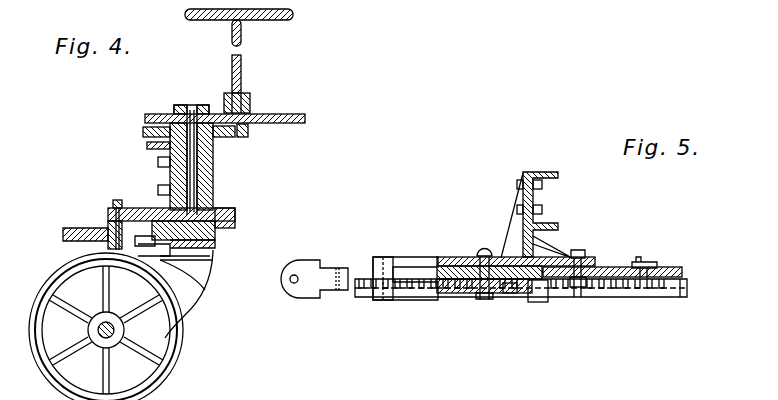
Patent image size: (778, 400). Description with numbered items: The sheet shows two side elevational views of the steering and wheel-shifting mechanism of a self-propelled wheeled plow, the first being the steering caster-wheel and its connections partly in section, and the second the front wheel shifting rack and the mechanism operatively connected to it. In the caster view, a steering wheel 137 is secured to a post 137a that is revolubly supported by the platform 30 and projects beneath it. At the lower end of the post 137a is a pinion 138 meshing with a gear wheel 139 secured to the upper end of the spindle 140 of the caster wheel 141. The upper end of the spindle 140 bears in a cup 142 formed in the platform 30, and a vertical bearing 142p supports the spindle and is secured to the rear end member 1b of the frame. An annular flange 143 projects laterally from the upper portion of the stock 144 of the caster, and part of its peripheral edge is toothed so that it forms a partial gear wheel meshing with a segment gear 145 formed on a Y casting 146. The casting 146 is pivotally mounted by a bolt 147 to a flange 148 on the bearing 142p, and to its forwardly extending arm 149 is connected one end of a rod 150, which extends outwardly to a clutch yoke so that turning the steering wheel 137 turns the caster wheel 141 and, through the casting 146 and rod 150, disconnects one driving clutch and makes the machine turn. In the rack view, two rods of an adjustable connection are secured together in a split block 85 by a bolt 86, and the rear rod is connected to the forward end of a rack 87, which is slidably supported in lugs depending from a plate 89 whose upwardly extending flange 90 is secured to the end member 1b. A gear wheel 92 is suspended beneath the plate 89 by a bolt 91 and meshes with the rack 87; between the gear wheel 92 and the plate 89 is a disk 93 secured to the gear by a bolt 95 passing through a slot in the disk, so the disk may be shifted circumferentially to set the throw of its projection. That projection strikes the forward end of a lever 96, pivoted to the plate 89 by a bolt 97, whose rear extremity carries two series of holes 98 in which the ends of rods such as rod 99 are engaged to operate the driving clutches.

In FIG. 4, the steering wheel 137 is at (293, 14).
In FIG. 4, the post 137a is at (241, 72).
In FIG. 4, the platform 30 is at (305, 121).
In FIG. 4, the cup 142 is at (181, 104).
In FIG. 4, the spindle 140 is at (213, 173).
In FIG. 4, the vertical bearing 142p is at (213, 192).
In FIG. 4, the gear wheel 139 is at (143, 133).
In FIG. 4, the pinion 138 is at (248, 132).
In FIG. 4, the rear end member of frame 1b is at (168, 175).
In FIG. 5, the rear end member of frame 1b is at (558, 176).
In FIG. 4, the annular flange 143 is at (235, 218).
In FIG. 4, the segment gear 145 is at (130, 206).
In FIG. 4, the flange 148 is at (108, 210).
In FIG. 4, the Y casting 146 is at (106, 226).
In FIG. 4, the bolt 147 is at (100, 242).
In FIG. 4, the rod 150 is at (135, 252).
In FIG. 4, the forwardly extending arm 149 is at (215, 257).
In FIG. 4, the stock of the caster 144 is at (186, 294).
In FIG. 4, the caster wheel 141 is at (181, 346).
In FIG. 5, the rack 87 is at (418, 290).
In FIG. 5, the bolt 86 is at (383, 300).
In FIG. 5, the plate 89 is at (408, 263).
In FIG. 5, the disk 93 is at (458, 257).
In FIG. 5, the gear wheel 92 is at (457, 292).
In FIG. 5, the bolt 91 is at (484, 300).
In FIG. 5, the bolt 95 is at (510, 293).
In FIG. 5, the split block 85 is at (538, 302).
In FIG. 5, the upwardly extending flange 90 is at (533, 237).
In FIG. 5, the lever 96 is at (606, 267).
In FIG. 5, the bolt 97 is at (578, 297).
In FIG. 5, the rod 99 is at (652, 262).
In FIG. 5, the series of holes 98 is at (667, 279).